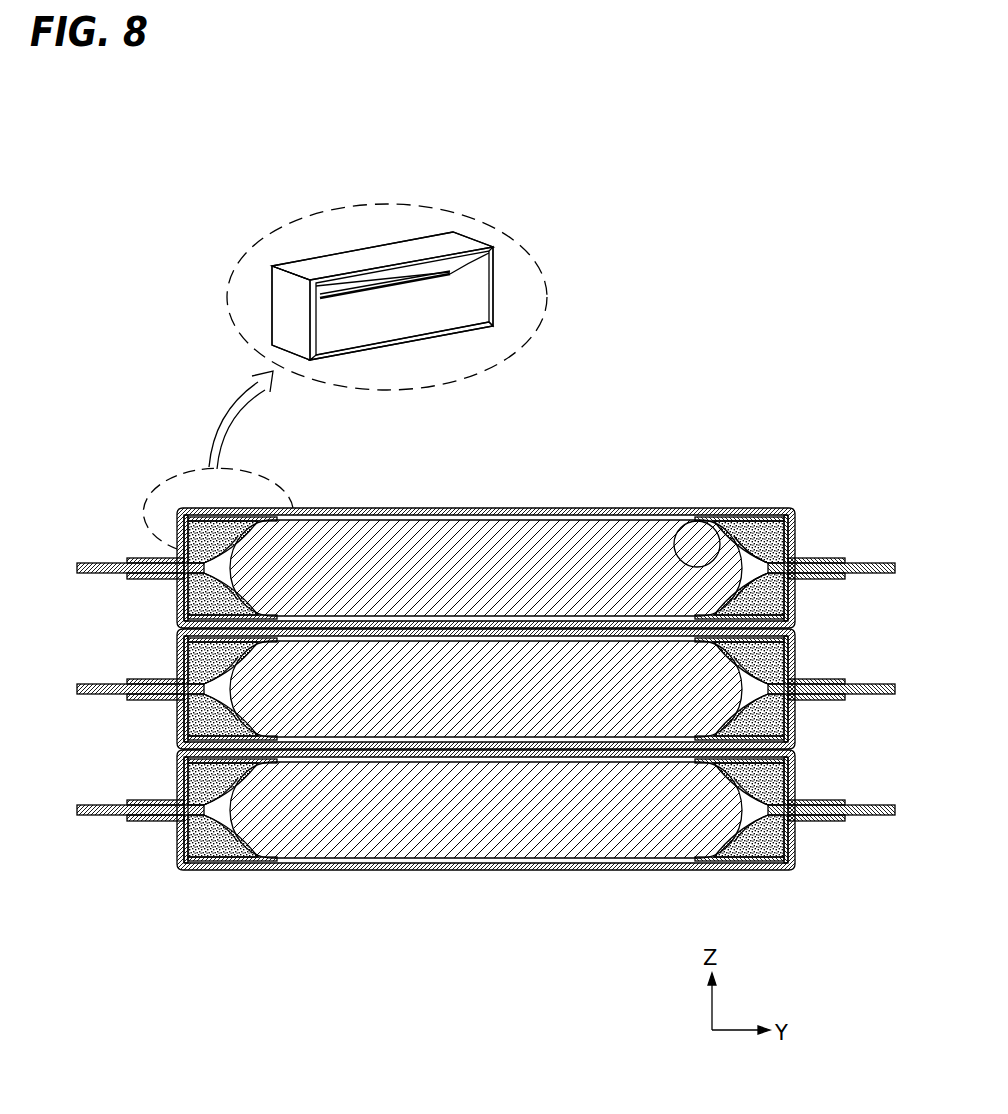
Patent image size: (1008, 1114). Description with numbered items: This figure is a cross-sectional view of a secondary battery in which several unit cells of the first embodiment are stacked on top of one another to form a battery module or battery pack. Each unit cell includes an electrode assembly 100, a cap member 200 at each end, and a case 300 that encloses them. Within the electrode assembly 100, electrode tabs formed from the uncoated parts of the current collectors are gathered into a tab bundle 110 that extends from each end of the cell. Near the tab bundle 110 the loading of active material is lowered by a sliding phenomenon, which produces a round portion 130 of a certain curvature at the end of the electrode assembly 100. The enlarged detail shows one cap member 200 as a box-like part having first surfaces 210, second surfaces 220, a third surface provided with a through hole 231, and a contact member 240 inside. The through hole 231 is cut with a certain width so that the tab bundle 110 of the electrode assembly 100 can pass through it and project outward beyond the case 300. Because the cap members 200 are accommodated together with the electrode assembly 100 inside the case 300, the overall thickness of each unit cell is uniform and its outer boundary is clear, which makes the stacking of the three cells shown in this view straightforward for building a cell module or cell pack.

The electrode assembly 100 is at (332, 551).
The tab bundle 110 is at (97, 562).
The round portion 130 is at (673, 524).
The cap member 200 is at (370, 257).
The first surfaces 210 is at (322, 267).
The second surfaces 220 is at (288, 308).
The through hole 231 is at (383, 291).
The contact member 240 is at (467, 311).
The case 300 is at (487, 507).